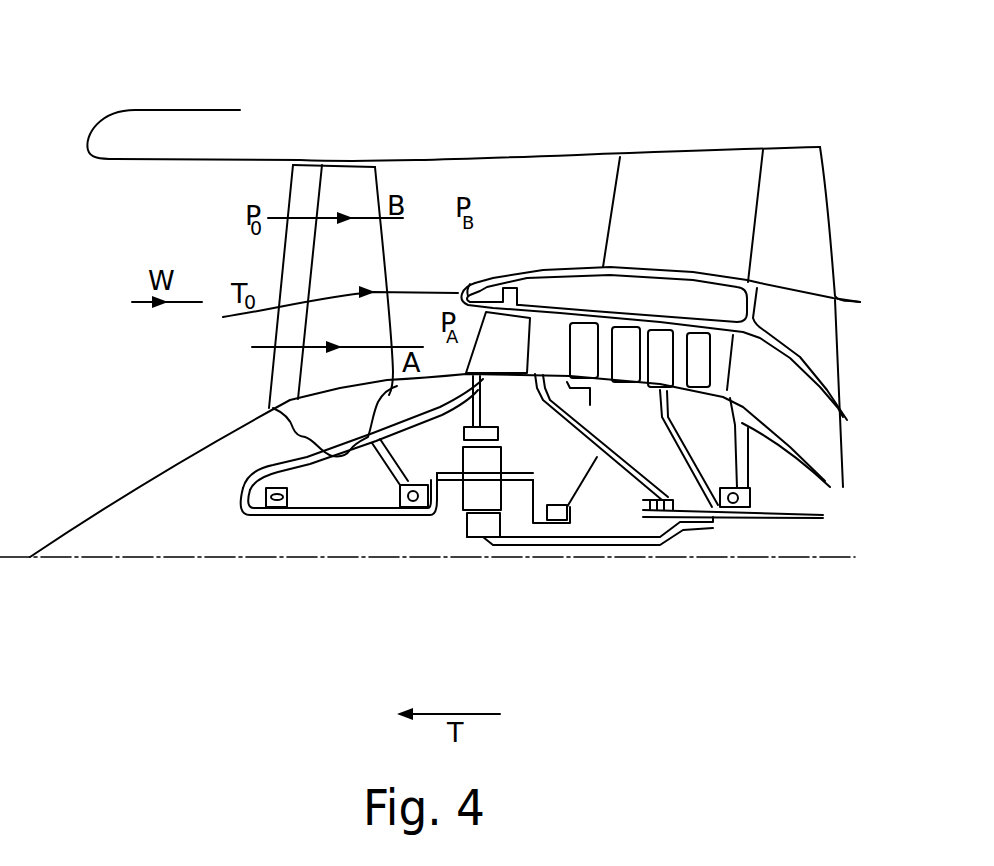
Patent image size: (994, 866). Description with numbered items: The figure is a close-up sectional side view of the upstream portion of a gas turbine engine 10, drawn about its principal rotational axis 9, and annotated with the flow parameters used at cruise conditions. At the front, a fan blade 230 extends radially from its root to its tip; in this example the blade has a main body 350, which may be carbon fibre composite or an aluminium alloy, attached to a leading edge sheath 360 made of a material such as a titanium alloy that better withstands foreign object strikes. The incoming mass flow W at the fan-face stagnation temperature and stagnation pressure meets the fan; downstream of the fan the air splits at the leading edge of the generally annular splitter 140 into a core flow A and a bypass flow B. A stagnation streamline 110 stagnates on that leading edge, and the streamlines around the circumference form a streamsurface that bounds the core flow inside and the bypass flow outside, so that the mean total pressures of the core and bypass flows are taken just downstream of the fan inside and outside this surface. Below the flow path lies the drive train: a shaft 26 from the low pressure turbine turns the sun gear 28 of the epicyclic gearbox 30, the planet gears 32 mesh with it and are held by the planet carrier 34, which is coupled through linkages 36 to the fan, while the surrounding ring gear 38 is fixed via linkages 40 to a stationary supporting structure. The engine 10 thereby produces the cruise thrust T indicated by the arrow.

The gas turbine engine 10 is at (630, 122).
The fan blade 230 is at (410, 96).
The leading edge sheath 360 is at (307, 183).
The main body 350 is at (351, 183).
The stagnation streamline 110 is at (426, 290).
The splitter 140 is at (468, 278).
The linkages 40 is at (485, 408).
The ring gear 38 is at (463, 435).
The linkages 36 is at (420, 540).
The epicyclic gearbox 30 is at (430, 540).
The planet gears 32 is at (470, 500).
The sun gear 28 is at (483, 530).
The planet carrier 34 is at (530, 520).
The shaft 26 is at (630, 542).
The principal rotational axis 9 is at (260, 560).